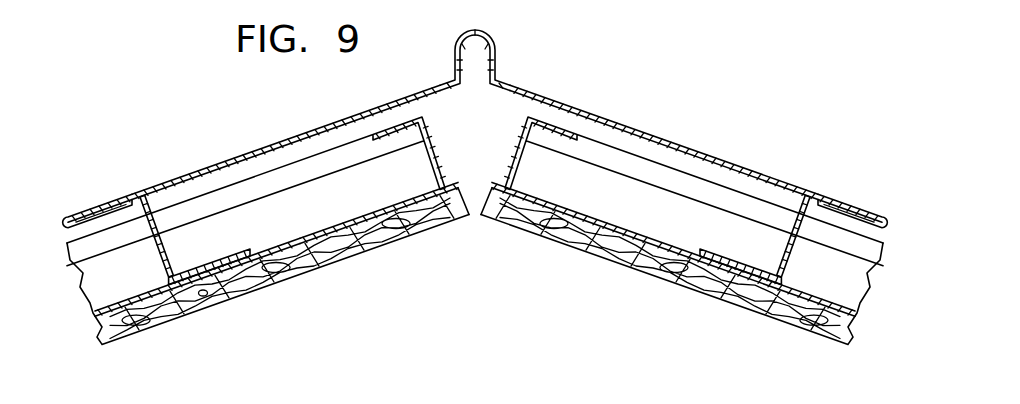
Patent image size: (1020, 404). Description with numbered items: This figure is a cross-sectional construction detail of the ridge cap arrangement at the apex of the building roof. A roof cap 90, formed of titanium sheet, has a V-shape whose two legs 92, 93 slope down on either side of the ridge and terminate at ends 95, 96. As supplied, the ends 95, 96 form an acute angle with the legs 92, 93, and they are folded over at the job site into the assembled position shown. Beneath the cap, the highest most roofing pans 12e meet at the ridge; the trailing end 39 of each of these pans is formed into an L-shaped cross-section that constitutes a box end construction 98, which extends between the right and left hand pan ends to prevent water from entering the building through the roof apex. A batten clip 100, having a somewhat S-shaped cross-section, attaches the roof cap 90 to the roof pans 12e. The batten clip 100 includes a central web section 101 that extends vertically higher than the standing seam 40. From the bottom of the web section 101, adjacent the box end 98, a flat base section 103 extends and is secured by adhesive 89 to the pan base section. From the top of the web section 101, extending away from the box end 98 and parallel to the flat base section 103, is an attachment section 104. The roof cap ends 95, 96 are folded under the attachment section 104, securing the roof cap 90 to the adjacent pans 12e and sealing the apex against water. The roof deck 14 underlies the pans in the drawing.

The roof cap 90 is at (519, 84).
The leg of roof cap 92 is at (228, 158).
The leg of roof cap 93 is at (690, 143).
The end of roof cap 95 is at (97, 200).
The end of roof cap 96 is at (828, 193).
The attachment section 104 is at (123, 197).
The standing seam 40 is at (612, 151).
The batten clip 100 is at (153, 257).
The central web section 101 is at (800, 255).
The flat base section 103 is at (283, 276).
The adhesive 89 is at (210, 297).
The highest most roofing pans 12e is at (393, 207).
The trailing end 39 is at (437, 197).
The box end construction 98 is at (527, 163).
The roof deck 14 is at (187, 314).